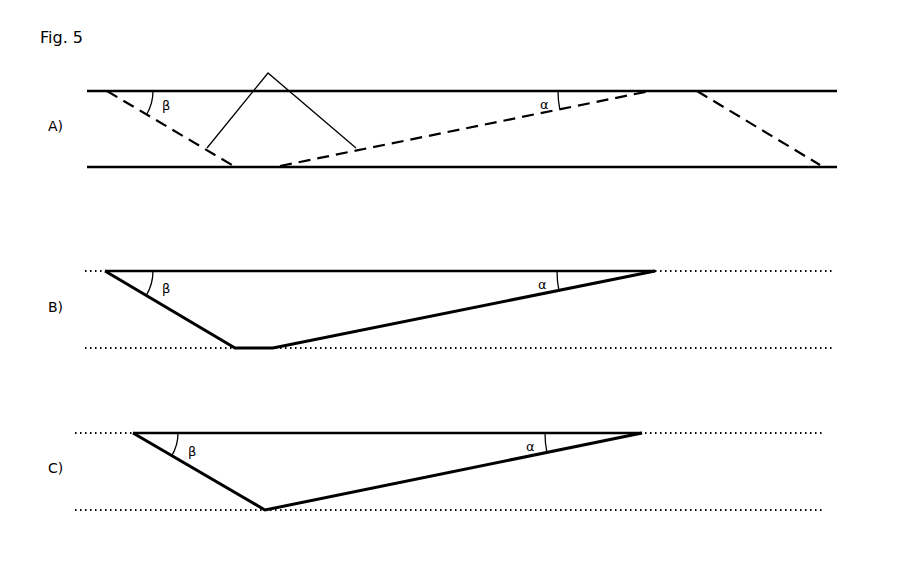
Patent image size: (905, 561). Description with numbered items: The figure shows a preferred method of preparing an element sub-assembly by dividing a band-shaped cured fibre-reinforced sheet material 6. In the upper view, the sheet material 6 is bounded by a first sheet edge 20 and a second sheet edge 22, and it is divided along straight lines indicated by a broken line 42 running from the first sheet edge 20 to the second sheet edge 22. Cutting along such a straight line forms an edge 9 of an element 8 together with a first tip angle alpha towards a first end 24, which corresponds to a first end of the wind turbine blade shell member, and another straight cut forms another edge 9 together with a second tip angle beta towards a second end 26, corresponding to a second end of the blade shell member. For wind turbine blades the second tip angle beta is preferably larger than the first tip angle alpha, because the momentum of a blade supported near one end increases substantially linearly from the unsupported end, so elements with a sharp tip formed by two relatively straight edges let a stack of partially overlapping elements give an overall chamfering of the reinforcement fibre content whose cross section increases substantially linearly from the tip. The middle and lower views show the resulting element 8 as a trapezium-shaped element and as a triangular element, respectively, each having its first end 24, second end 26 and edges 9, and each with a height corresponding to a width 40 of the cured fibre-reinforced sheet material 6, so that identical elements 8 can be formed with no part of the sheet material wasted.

The first sheet edge 20 is at (382, 91).
The second sheet edge 22 is at (382, 167).
The cured fibre-reinforced sheet material 6 is at (628, 138).
The broken line 42 is at (281, 99).
The element 8 is at (378, 303).
The edge 9 is at (284, 358).
The second end 26 is at (105, 272).
The first end 24 is at (655, 272).
The width 40 is at (258, 272).